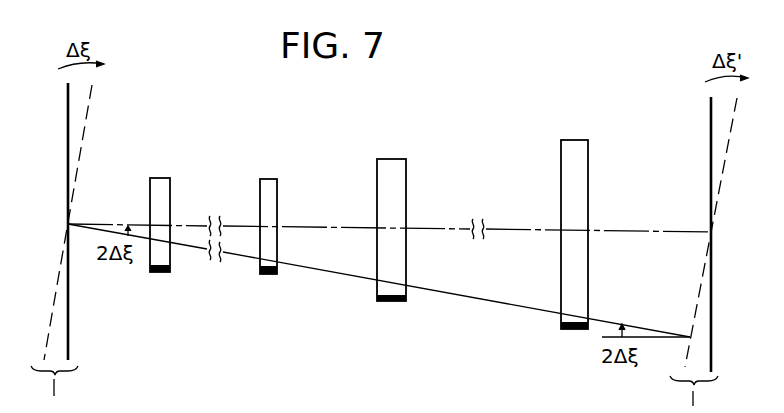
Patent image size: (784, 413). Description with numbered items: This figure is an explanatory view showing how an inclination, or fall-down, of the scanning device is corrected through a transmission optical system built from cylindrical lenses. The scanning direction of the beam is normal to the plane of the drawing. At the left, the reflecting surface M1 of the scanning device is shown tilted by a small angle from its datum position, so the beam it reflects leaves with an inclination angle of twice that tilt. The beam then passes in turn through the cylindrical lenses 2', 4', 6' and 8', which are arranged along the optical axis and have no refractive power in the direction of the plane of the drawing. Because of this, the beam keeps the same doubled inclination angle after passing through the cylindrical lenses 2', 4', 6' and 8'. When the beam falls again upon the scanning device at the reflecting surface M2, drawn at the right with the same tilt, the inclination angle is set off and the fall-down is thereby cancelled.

The reflecting surface M1 is at (68, 318).
The second scanning mirror M2 is at (712, 315).
The cylindrical lens 2' is at (160, 252).
The cylindrical lens 4' is at (270, 257).
The cylindrical lens 6' is at (391, 259).
The cylindrical lens 8' is at (574, 266).